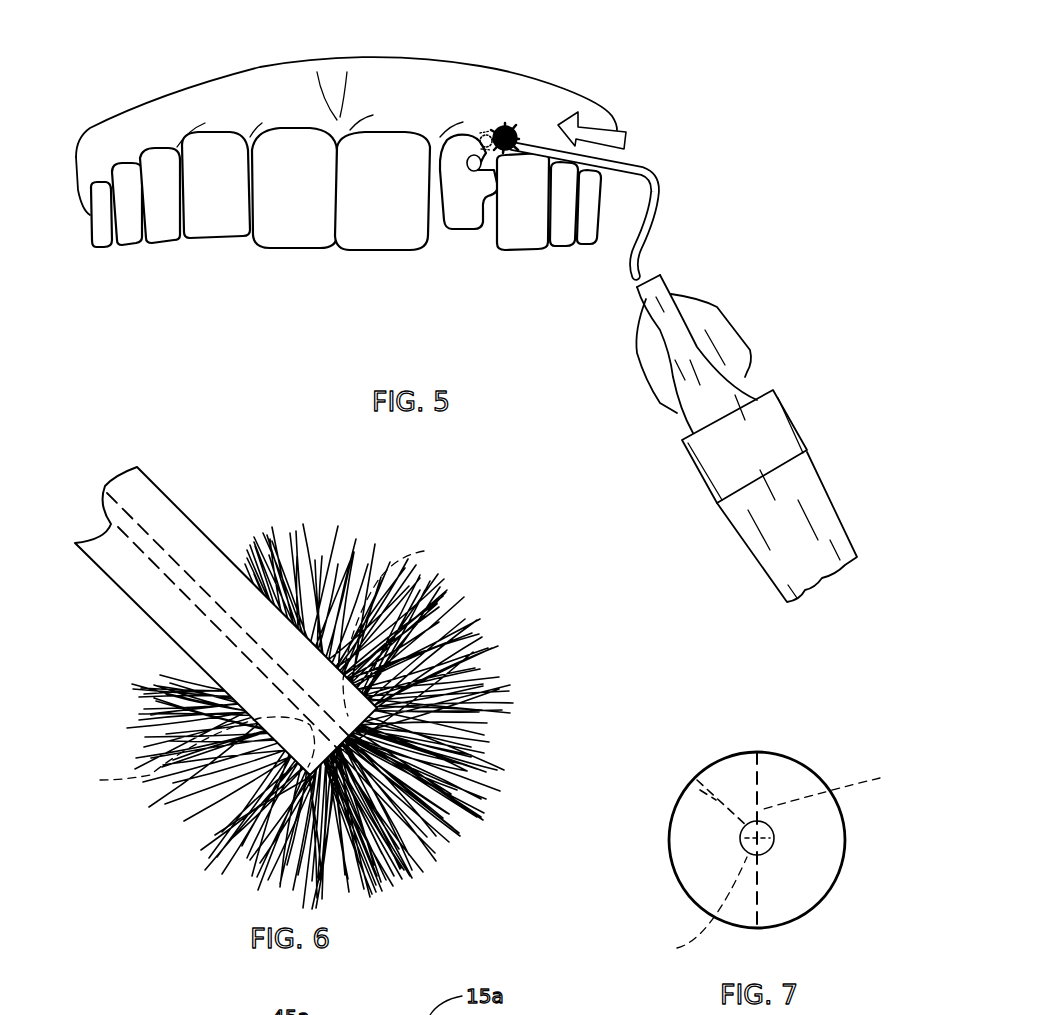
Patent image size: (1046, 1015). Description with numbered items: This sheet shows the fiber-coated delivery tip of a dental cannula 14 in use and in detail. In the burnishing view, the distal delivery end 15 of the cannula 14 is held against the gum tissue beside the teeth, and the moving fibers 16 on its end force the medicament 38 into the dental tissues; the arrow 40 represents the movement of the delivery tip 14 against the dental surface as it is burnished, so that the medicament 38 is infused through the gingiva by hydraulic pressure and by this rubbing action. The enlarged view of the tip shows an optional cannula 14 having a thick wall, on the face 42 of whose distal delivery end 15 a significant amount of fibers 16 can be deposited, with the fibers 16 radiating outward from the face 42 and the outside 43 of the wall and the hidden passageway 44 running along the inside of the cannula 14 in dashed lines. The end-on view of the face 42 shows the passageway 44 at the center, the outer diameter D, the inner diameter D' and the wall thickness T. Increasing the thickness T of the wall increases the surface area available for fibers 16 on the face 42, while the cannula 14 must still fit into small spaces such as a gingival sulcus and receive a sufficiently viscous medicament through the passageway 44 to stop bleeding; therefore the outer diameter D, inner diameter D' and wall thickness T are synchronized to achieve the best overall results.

In FIG. 5, the cannula 14 is at (672, 181).
In FIG. 7, the cannula 14 is at (690, 752).
In FIG. 6, the distal delivery end 15 is at (352, 716).
In FIG. 6, the fibers 16 is at (125, 690).
In FIG. 5, the medicament 38 is at (486, 134).
In FIG. 5, the arrow 40 is at (618, 135).
In FIG. 6, the face 42 is at (410, 610).
In FIG. 7, the face 42 is at (797, 778).
In FIG. 6, the outside portion of the cannula wall 43 is at (247, 840).
In FIG. 6, the passageway 44 is at (215, 597).
In FIG. 7, the passageway 44 is at (770, 850).
In FIG. 6, the outer diameter D is at (394, 627).
In FIG. 7, the outer diameter D is at (830, 788).
In FIG. 6, the inner diameter D' is at (196, 755).
In FIG. 7, the inner diameter D' is at (699, 909).
In FIG. 7, the wall thickness T is at (713, 800).